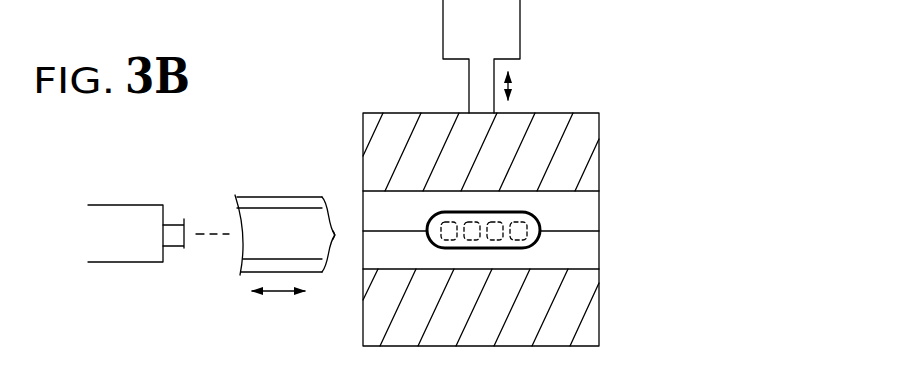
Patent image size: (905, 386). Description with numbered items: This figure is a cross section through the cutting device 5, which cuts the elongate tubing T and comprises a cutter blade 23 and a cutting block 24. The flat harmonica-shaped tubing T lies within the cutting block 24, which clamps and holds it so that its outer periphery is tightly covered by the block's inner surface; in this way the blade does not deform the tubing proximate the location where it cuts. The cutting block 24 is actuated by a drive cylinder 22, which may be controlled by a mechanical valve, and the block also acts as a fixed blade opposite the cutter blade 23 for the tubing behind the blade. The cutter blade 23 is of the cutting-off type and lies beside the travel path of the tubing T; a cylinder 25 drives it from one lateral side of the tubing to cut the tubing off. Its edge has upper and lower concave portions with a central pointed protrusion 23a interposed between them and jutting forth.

The drive cylinder 22 is at (507, 40).
The cutting block 24 is at (608, 152).
The cutting device 5 is at (338, 132).
The tubing T is at (540, 238).
The cutter blade 23 is at (283, 208).
The pointed protrusion 23a is at (336, 237).
The cylinder 25 is at (127, 219).